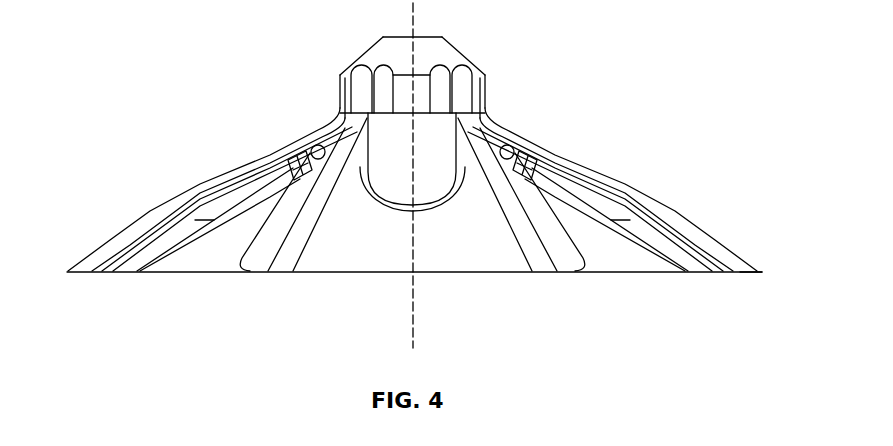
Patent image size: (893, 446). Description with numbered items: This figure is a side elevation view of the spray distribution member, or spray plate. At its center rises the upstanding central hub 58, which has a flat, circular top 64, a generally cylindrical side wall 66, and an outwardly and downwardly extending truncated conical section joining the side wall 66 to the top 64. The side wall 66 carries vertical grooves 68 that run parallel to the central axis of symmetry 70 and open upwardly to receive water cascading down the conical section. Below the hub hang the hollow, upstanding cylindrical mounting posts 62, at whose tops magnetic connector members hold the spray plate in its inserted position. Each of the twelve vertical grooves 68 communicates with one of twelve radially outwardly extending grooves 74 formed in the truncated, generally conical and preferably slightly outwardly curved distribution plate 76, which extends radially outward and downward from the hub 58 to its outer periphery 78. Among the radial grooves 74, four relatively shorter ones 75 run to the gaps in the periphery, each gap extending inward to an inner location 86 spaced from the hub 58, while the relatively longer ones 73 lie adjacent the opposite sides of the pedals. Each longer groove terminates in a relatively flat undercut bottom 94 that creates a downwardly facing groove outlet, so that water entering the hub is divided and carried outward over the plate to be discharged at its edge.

The central hub 58 is at (487, 77).
The cylindrical mounting post 62 is at (424, 202).
The top 64 is at (424, 37).
The side wall 66 is at (450, 55).
The vertical grooves 68 is at (381, 103).
The central axis of symmetry 70 is at (415, 318).
The longer grooves 73 is at (537, 255).
The radial grooves 74 is at (309, 136).
The shorter grooves 75 is at (503, 150).
The distribution plate 76 is at (657, 203).
The outer periphery 78 is at (757, 272).
The inner location 86 is at (275, 153).
The undercut bottom 94 is at (67, 272).